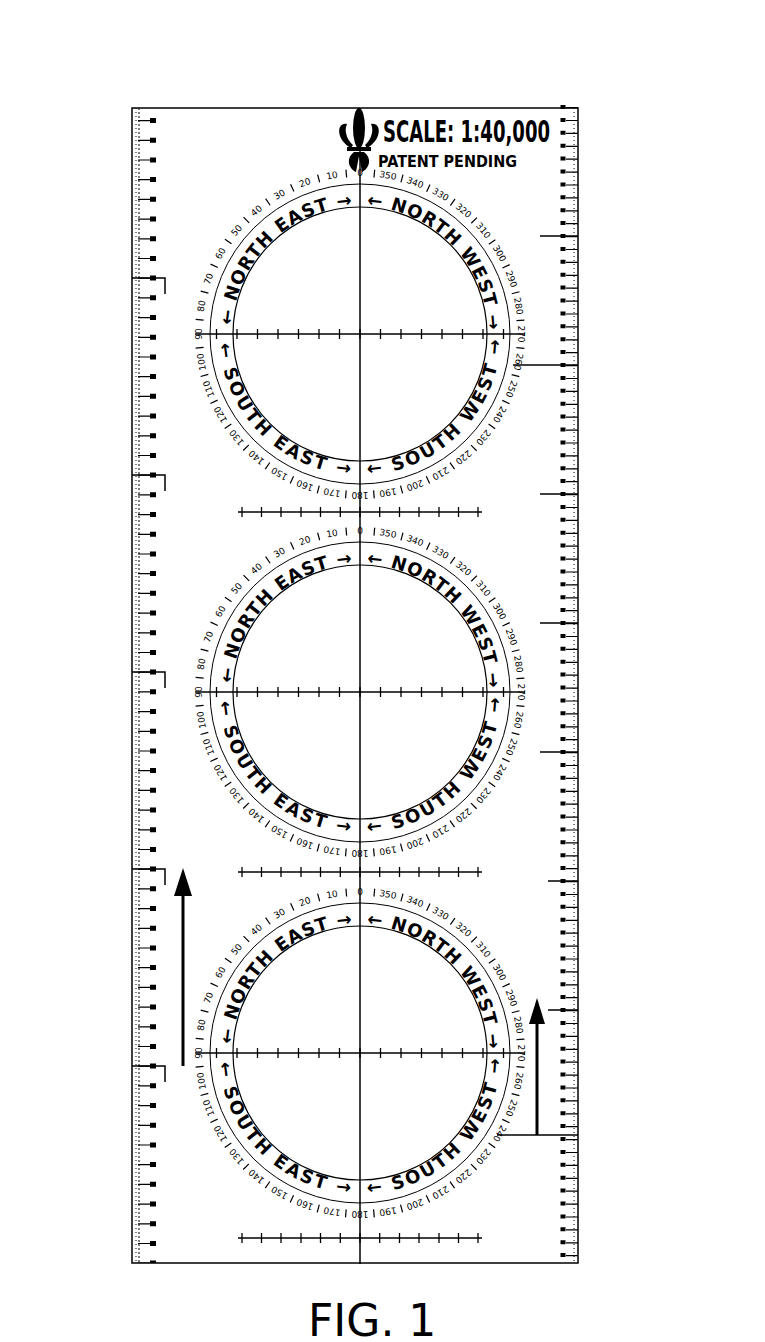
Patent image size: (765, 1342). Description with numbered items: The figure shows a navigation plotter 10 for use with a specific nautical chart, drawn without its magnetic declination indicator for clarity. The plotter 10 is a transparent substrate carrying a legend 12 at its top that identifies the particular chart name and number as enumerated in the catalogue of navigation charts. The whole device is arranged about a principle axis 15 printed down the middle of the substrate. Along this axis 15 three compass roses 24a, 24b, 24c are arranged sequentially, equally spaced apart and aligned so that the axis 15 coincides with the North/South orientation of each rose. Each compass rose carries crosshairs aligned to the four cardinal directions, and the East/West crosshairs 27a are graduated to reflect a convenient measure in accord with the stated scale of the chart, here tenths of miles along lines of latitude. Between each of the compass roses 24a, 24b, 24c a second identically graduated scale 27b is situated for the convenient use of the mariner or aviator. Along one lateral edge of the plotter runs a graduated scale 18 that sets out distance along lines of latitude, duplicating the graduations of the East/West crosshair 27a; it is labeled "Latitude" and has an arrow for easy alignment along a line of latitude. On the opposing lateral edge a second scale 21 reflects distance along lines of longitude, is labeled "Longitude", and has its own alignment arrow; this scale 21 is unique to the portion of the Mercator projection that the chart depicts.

The plotter 10 is at (483, 90).
The legend 12 is at (232, 108).
The principle axis 15 is at (362, 255).
The graduated scale 18 is at (133, 664).
The second scale 21 is at (580, 670).
The compass rose 24a is at (515, 363).
The compass rose 24b is at (463, 793).
The compass rose 24c is at (525, 1134).
The East/West crosshairs 27a is at (305, 338).
The second identically graduated scale 27b is at (287, 873).